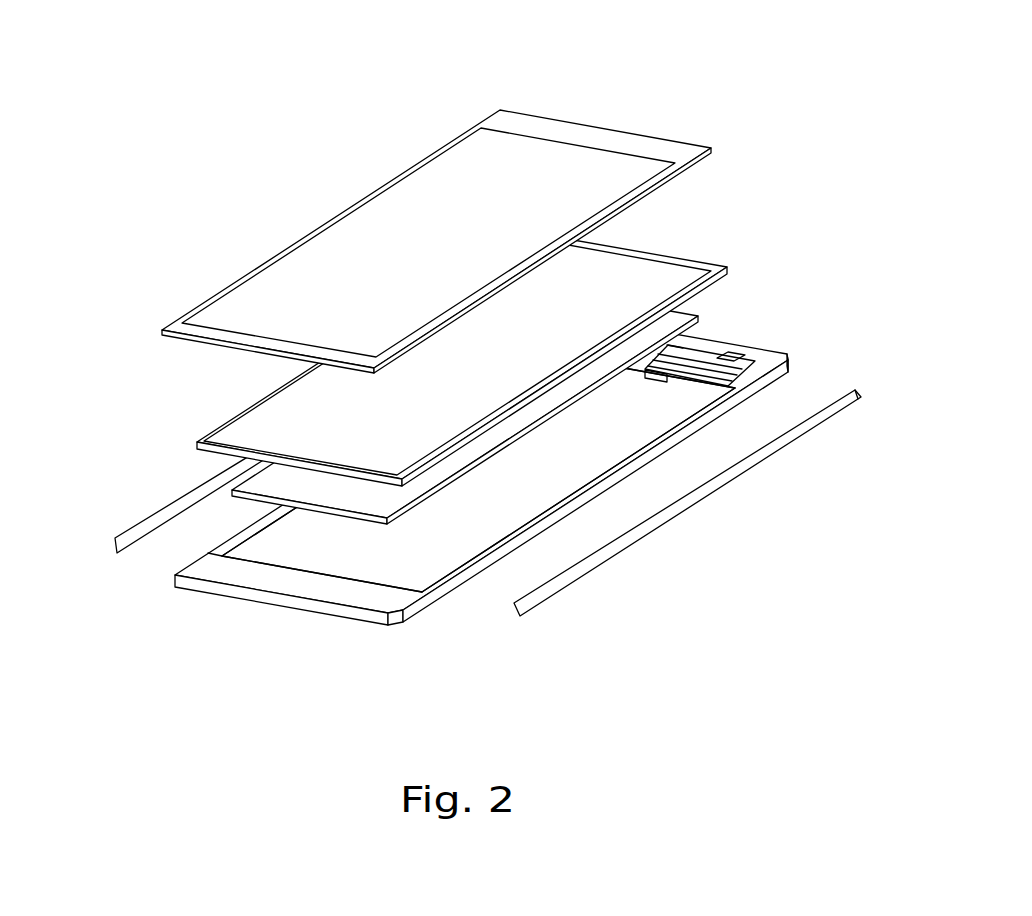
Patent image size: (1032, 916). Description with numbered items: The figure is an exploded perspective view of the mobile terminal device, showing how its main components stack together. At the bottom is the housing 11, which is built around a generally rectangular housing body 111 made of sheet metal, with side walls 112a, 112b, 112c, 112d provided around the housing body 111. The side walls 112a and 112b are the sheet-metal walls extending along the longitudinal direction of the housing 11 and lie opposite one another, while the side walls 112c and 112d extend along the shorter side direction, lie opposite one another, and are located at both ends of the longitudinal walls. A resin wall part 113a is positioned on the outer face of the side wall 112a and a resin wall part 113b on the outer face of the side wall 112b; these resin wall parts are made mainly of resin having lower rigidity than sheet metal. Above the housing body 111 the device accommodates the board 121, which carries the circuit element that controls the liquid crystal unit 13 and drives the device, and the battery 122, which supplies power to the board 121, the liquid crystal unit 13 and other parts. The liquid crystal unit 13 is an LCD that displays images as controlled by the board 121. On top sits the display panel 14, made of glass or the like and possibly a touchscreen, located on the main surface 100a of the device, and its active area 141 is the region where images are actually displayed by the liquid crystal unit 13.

The housing 11 is at (517, 484).
The housing body 111 is at (466, 535).
The side wall 112a is at (465, 572).
The side wall 112b is at (233, 540).
The side wall 112c is at (737, 346).
The side wall 112d is at (218, 592).
The resin wall part 113a is at (773, 448).
The resin wall part 113b is at (118, 530).
The main surface 100a is at (773, 358).
The battery 122 is at (360, 517).
The liquid crystal unit 13 is at (501, 322).
The board 121 is at (688, 317).
The display panel 14 is at (437, 195).
The active area 141 is at (575, 153).